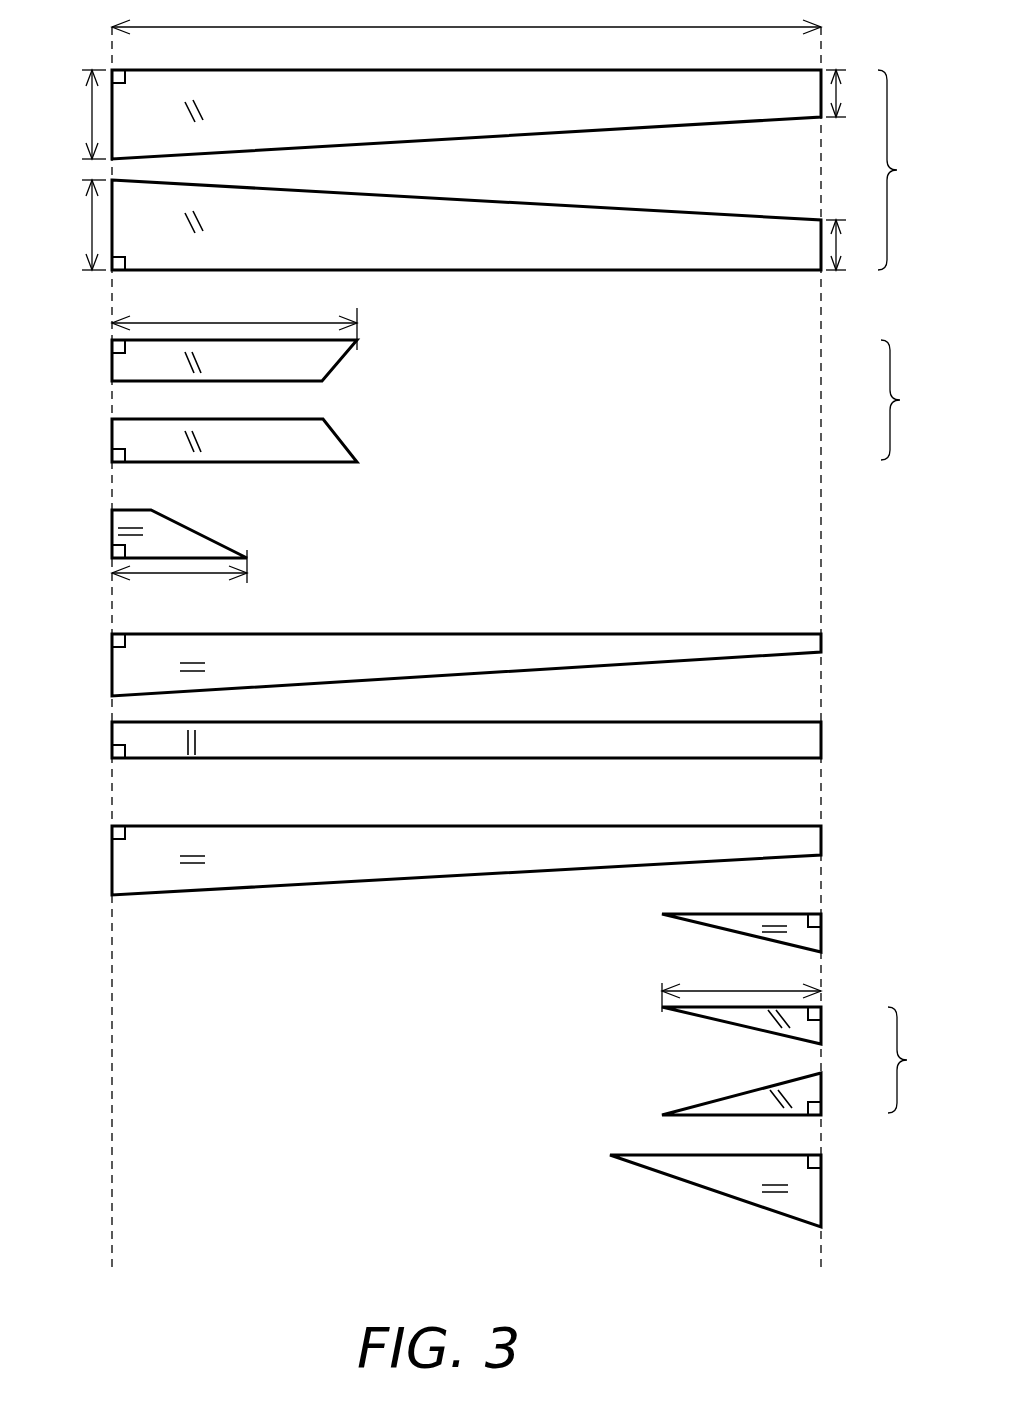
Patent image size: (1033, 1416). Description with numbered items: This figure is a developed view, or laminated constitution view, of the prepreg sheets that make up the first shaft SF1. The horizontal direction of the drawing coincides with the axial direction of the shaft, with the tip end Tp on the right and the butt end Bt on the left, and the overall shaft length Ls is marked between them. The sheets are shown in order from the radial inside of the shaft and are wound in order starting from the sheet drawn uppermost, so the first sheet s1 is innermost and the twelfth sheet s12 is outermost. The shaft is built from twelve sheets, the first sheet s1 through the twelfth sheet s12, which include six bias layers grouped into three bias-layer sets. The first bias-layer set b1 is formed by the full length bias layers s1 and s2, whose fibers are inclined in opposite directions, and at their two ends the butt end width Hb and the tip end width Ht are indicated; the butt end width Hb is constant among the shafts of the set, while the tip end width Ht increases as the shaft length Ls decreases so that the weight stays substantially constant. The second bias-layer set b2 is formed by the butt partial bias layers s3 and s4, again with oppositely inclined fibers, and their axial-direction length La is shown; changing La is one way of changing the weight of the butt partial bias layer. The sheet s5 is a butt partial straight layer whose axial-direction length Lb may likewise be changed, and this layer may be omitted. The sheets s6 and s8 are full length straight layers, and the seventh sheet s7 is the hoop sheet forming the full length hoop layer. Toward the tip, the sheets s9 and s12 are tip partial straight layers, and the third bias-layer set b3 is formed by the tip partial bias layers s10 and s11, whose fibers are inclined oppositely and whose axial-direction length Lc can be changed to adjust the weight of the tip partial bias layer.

The first sheet s1 is at (778, 112).
The second sheet s2 is at (794, 230).
The third sheet s3 is at (322, 360).
The fourth sheet s4 is at (322, 440).
The fifth sheet s5 is at (190, 541).
The sixth sheet s6 is at (815, 643).
The seventh sheet s7 is at (815, 745).
The eighth sheet s8 is at (815, 840).
The ninth sheet s9 is at (815, 935).
The tenth sheet s10 is at (815, 1030).
The eleventh sheet s11 is at (815, 1097).
The twelfth sheet s12 is at (815, 1200).
The first bias-layer set b1 is at (525, 170).
The second bias-layer set b2 is at (526, 401).
The third bias-layer set b3 is at (772, 1061).
The shaft length Ls is at (466, 17).
The axial-direction length of the butt partial bias layer La is at (177, 323).
The axial-direction length of the butt partial straight layer Lb is at (179, 579).
The axial-direction length of the tip partial bias layer Lc is at (741, 987).
The butt end width Hb is at (73, 170).
The tip end width Ht is at (852, 170).
The butt end Bt is at (112, 665).
The tip end Tp is at (823, 665).
The first shaft SF1 is at (340, 1078).